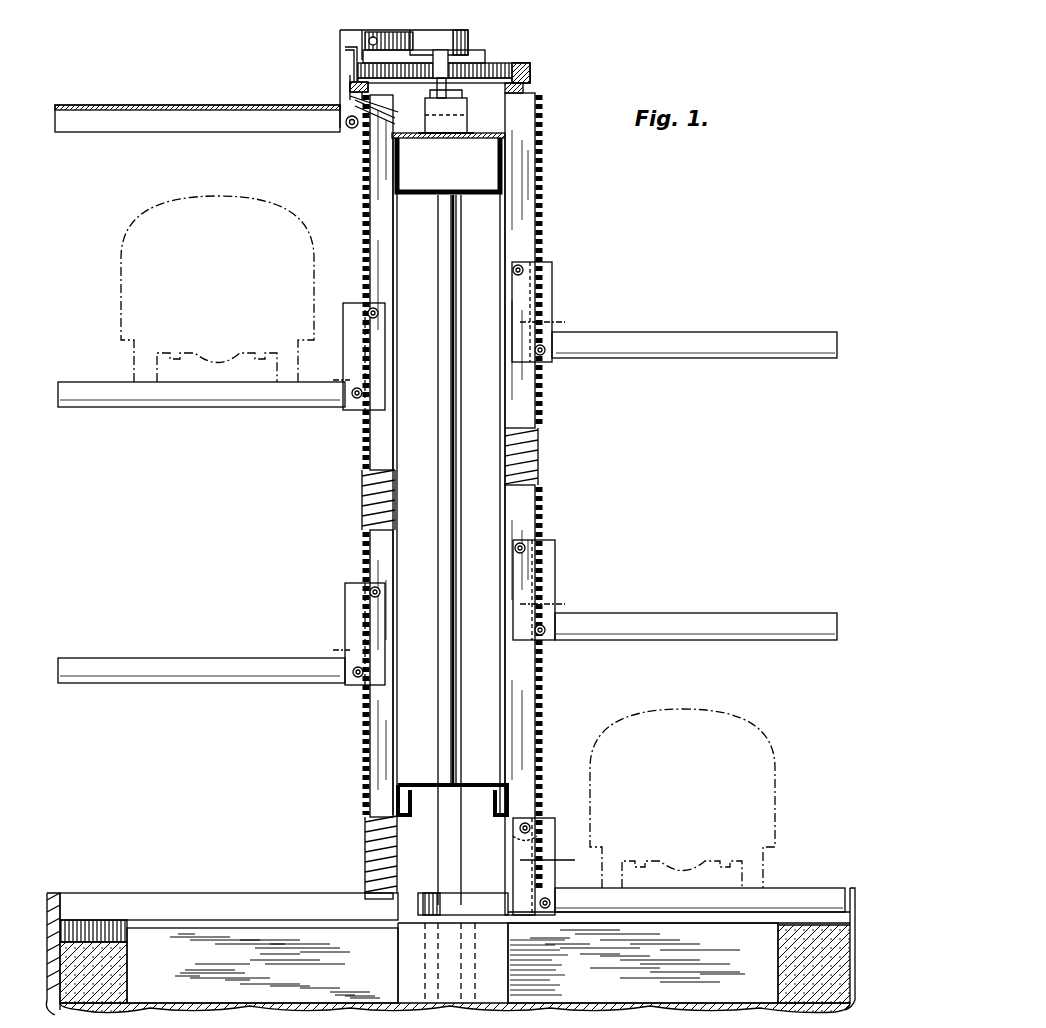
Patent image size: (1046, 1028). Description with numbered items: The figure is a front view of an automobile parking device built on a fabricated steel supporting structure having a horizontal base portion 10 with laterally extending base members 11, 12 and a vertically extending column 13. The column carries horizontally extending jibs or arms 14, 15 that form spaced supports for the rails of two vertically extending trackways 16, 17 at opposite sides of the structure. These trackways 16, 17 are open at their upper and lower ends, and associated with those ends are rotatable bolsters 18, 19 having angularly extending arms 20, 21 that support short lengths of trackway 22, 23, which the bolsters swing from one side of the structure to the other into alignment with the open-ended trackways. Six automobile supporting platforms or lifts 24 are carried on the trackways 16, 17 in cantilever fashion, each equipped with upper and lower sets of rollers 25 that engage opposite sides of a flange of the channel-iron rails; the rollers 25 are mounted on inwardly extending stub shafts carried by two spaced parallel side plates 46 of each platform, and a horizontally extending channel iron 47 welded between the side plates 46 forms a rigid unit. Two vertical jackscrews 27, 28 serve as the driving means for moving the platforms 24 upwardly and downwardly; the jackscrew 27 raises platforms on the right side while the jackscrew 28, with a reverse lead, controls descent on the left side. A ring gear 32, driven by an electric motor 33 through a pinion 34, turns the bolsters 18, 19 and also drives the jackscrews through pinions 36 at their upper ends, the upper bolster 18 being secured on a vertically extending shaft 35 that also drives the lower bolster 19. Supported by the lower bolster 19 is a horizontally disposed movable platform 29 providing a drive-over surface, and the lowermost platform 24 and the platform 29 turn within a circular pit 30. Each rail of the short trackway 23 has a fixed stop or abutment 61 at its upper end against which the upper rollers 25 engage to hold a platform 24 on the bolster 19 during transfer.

The horizontal base portion 10 is at (455, 975).
The base member 11 is at (283, 992).
The base member 12 is at (588, 992).
The vertical extending column 13 is at (414, 995).
The jib or arm 14 is at (428, 188).
The jib or arm 15 is at (426, 786).
The vertical extending trackway 16 is at (528, 402).
The vertical extending trackway 17 is at (384, 452).
The rotatable bolster 18 is at (470, 60).
The rotatable bolster 19 is at (438, 900).
The angularly extending arm 20 is at (394, 35).
The angularly extending arm 21 is at (486, 898).
The short length of trackway 22 is at (358, 32).
The short length of trackway 23 is at (512, 856).
The automobile supporting platform or lift 24 is at (198, 128).
The roller 25 is at (350, 128).
The jackscrew 27 is at (540, 457).
The jackscrew 28 is at (366, 504).
The movable platform 29 is at (200, 900).
The circular pit 30 is at (88, 925).
The ring gear 32 is at (520, 70).
The electric motor 33 is at (440, 128).
The pinion 34 is at (442, 62).
The vertical extending shaft 35 is at (440, 402).
The pinion 36 is at (362, 72).
The side plate 46 is at (340, 82).
The channel iron 47 is at (346, 48).
The fixed stop or abutment 61 is at (538, 838).